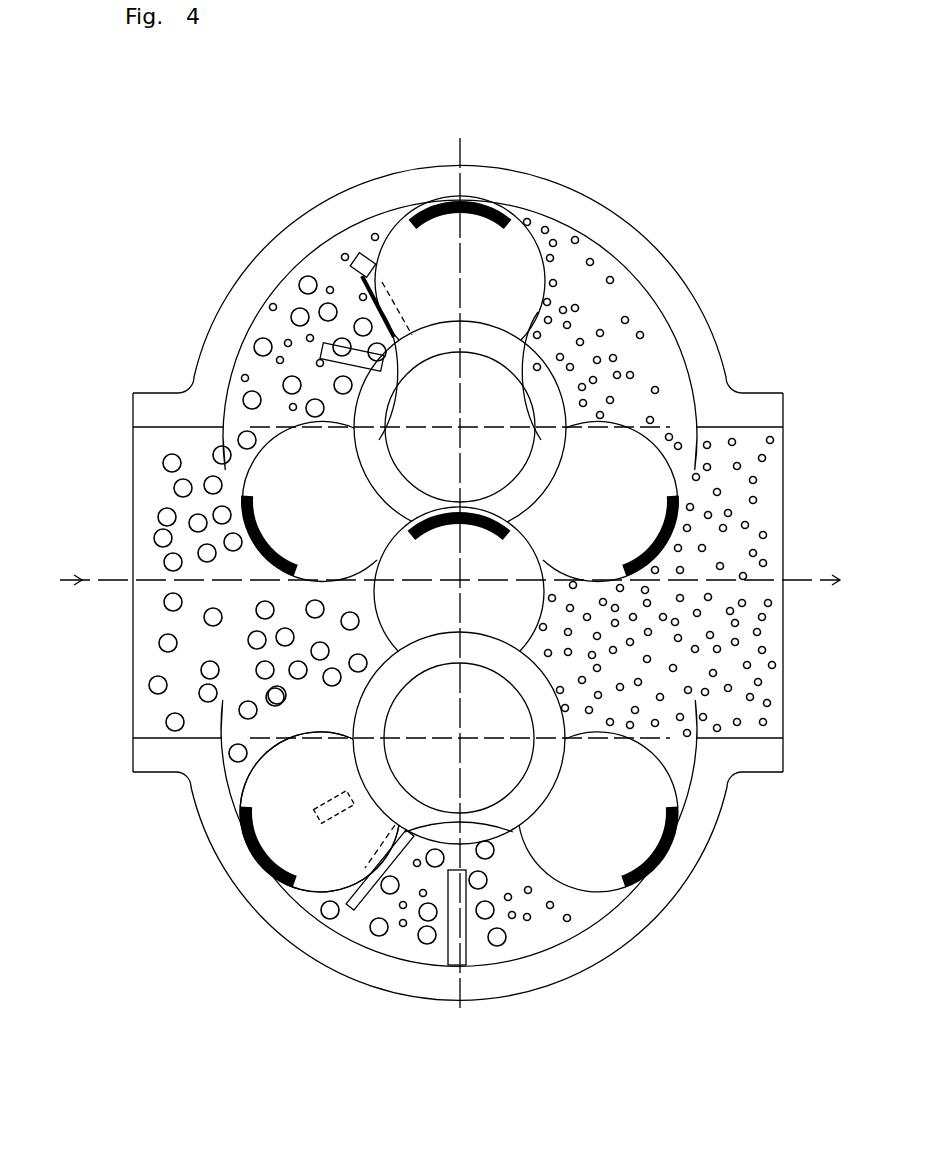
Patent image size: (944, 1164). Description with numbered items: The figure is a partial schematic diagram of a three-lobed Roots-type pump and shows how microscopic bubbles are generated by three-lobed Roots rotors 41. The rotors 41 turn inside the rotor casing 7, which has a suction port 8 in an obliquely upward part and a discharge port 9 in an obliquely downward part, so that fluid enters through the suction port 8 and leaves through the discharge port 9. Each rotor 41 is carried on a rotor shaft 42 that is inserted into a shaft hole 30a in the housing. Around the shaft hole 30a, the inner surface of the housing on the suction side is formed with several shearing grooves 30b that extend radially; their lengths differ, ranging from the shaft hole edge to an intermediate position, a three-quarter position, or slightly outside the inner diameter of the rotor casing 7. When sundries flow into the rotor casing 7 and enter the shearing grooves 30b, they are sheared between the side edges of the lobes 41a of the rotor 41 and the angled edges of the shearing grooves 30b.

The rotor casing 7 is at (622, 228).
The suction port 8 is at (140, 728).
The discharge port 9 is at (778, 703).
The rotor shaft 42 is at (507, 405).
The three-lobed Roots rotor 41 is at (512, 214).
The lobe 41a is at (406, 218).
The shaft hole 30a is at (350, 390).
The shearing groove 30b is at (372, 296).